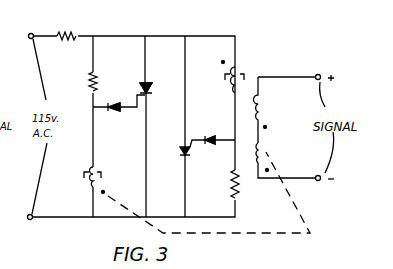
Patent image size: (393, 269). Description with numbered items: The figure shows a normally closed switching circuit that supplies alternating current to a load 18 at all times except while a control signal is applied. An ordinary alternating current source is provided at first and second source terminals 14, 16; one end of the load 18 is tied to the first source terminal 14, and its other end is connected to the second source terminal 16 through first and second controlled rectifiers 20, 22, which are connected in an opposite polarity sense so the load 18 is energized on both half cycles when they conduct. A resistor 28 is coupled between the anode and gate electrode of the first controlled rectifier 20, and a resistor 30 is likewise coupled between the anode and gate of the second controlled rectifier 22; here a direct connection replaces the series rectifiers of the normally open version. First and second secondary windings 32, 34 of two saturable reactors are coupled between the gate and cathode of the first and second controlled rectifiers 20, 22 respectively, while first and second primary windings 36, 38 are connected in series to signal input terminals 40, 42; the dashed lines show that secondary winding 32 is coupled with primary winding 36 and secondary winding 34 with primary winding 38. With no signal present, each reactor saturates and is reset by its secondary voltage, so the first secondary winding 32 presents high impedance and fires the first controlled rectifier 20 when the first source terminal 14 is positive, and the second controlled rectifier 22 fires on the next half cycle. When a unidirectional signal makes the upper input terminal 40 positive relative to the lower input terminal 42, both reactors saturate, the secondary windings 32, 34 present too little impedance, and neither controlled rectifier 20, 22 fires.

The first source terminal 14 is at (28, 34).
The second source terminal 16 is at (27, 219).
The load 18 is at (80, 33).
The first controlled rectifier 20 is at (147, 88).
The second controlled rectifier 22 is at (190, 155).
The resistor 28 is at (98, 88).
The resistor 30 is at (241, 187).
The first secondary winding 32 is at (97, 174).
The second secondary winding 34 is at (239, 70).
The first primary winding 36 is at (265, 152).
The second primary winding 38 is at (262, 102).
The upper signal input terminal 40 is at (319, 74).
The lower signal input terminal 42 is at (318, 184).